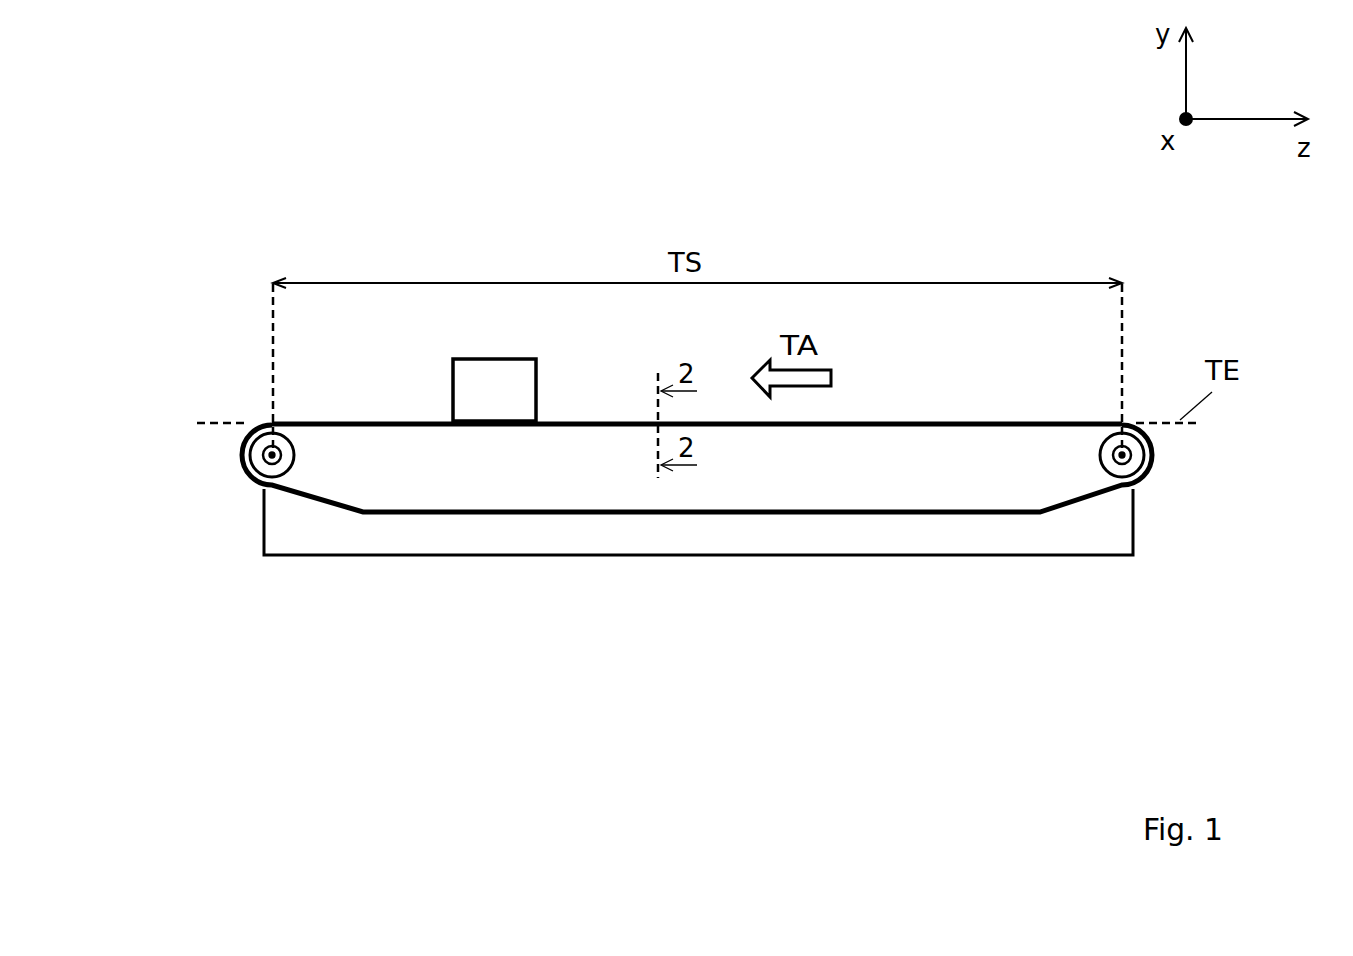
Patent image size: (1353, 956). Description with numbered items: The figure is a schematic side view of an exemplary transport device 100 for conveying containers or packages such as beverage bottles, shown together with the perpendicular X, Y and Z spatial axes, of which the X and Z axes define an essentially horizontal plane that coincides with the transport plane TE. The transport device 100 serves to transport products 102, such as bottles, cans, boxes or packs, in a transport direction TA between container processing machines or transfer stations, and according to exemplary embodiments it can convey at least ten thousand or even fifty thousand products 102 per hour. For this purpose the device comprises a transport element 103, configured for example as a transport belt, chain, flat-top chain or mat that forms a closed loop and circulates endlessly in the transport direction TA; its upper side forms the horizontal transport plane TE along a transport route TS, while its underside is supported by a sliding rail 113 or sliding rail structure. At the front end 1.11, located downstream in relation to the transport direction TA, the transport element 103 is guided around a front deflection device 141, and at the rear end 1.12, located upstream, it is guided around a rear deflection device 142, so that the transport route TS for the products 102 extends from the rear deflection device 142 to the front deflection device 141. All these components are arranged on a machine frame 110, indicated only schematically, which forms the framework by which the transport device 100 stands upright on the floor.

The transport device 100 is at (228, 276).
The products 102 is at (469, 357).
The transport element 103 is at (1004, 412).
The machine frame 110 is at (292, 557).
The sliding rail 113 is at (931, 434).
The front deflection device 141 is at (256, 457).
The rear deflection device 142 is at (1140, 457).
The front end 1.11 is at (206, 489).
The rear end 1.12 is at (1173, 486).